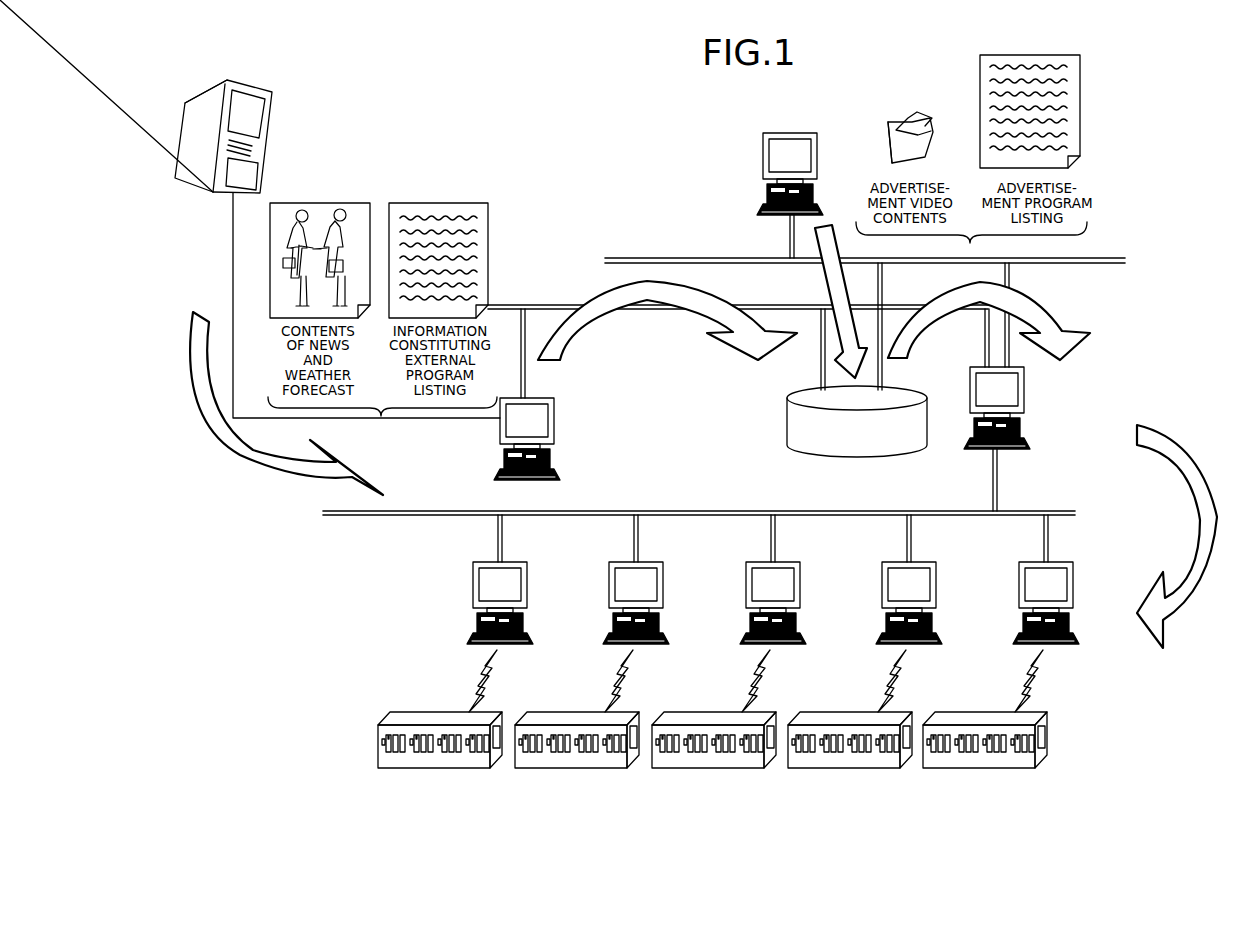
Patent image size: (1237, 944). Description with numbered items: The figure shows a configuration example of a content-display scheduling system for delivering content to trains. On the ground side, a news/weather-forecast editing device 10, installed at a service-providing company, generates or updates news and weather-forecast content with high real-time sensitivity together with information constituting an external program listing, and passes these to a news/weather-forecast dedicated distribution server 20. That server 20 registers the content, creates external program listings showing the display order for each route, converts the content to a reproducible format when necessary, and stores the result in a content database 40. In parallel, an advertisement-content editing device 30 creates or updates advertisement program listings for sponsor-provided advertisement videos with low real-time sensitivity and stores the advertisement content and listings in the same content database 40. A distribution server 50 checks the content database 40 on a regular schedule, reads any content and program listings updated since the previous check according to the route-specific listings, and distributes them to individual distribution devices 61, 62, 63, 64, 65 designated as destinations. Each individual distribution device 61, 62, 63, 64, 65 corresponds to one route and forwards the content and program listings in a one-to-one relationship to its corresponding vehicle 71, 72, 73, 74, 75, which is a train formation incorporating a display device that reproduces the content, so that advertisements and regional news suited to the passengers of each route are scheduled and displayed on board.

The news/weather-forecast editing device 10 is at (272, 135).
The news/weather-forecast dedicated distribution server 20 is at (554, 422).
The advertisement-content editing device 30 is at (761, 152).
The content database 40 is at (786, 422).
The distribution server 50 is at (1024, 390).
The individual distribution device 61 is at (528, 588).
The individual distribution device 62 is at (664, 588).
The individual distribution device 63 is at (801, 588).
The individual distribution device 64 is at (937, 588).
The individual distribution device 65 is at (1074, 588).
The vehicle 71 is at (414, 712).
The vehicle 72 is at (551, 712).
The vehicle 73 is at (688, 712).
The vehicle 74 is at (824, 712).
The vehicle 75 is at (959, 712).